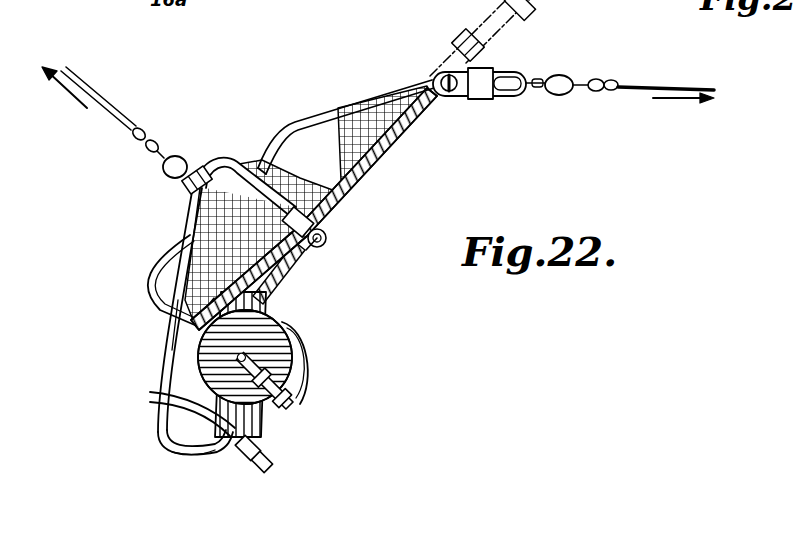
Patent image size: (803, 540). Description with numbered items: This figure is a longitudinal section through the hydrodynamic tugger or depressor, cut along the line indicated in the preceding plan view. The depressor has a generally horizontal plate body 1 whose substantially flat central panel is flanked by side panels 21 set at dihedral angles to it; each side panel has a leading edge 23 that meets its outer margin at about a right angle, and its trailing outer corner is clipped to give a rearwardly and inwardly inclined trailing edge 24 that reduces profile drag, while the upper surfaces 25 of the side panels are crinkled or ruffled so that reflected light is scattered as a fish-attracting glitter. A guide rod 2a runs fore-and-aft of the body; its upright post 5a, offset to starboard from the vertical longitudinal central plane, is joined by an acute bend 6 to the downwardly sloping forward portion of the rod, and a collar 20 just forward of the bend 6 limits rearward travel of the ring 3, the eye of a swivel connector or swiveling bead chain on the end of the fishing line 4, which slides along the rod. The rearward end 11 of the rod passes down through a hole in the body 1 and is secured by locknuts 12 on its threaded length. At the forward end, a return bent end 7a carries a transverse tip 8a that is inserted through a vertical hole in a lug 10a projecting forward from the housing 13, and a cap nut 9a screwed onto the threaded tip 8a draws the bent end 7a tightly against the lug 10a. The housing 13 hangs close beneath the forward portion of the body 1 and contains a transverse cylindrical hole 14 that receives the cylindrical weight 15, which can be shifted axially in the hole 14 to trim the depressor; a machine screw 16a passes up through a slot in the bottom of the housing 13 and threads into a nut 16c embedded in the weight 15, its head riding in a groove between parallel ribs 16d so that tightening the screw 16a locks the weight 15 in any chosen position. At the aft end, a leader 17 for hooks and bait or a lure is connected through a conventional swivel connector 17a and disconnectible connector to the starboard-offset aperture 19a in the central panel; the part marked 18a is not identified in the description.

The plate body 1 is at (384, 157).
The guide rod 2a is at (170, 350).
The ring 3 is at (190, 190).
The fishing line 4 is at (93, 97).
The upright post 5a is at (268, 146).
The bend 6 is at (230, 153).
The return bent end 7a is at (157, 428).
The transverse tip 8a is at (183, 398).
The cap nut 9a is at (267, 457).
The lug 10a is at (217, 450).
The rearward end 11 is at (300, 256).
The locknuts 12 is at (328, 214).
The housing 13 is at (300, 338).
The hole 14 is at (279, 273).
The weight 15 is at (278, 336).
The machine screw 16a is at (300, 397).
The nut 16c is at (293, 360).
The ribs 16d is at (307, 377).
The leader 17 is at (673, 83).
The swivel connector 17a is at (563, 94).
The clamp 18a is at (466, 97).
The aperture 19a is at (434, 80).
The collar 20 is at (207, 162).
The side panels 21 is at (173, 243).
The leading edge 23 is at (160, 308).
The trailing edges 24 is at (353, 93).
The upper surfaces 25 is at (343, 137).